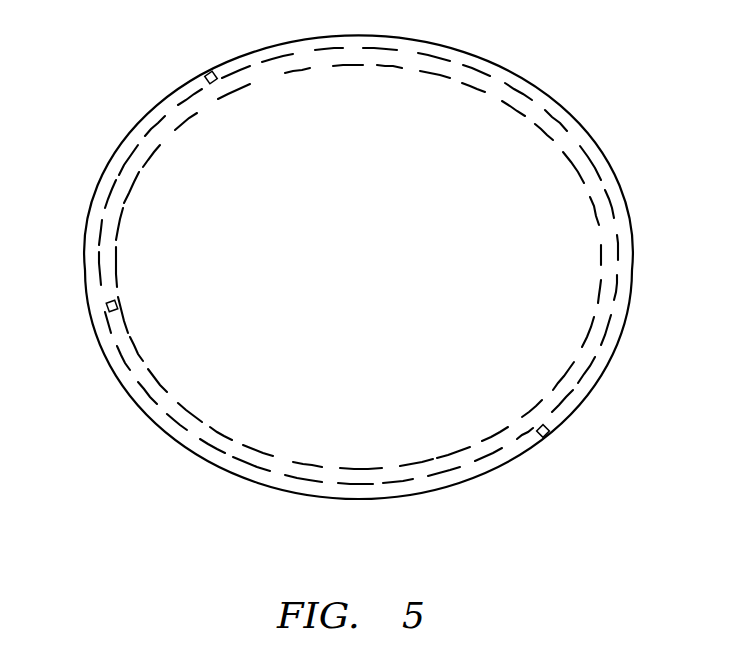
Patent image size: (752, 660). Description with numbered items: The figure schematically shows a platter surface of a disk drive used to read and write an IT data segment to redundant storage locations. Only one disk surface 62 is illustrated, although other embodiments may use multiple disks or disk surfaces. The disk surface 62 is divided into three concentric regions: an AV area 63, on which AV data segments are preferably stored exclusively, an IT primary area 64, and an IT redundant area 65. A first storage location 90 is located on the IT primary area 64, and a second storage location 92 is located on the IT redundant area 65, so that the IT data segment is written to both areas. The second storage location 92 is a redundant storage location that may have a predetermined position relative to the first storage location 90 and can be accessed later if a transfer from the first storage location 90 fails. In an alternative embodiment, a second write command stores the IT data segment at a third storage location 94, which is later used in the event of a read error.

The disk surface 62 is at (452, 49).
The AV area 63 is at (440, 125).
The IT primary area 64 is at (556, 141).
The IT redundant area 65 is at (610, 196).
The first storage location 90 is at (108, 302).
The second storage location 92 is at (209, 74).
The third storage location 94 is at (548, 434).